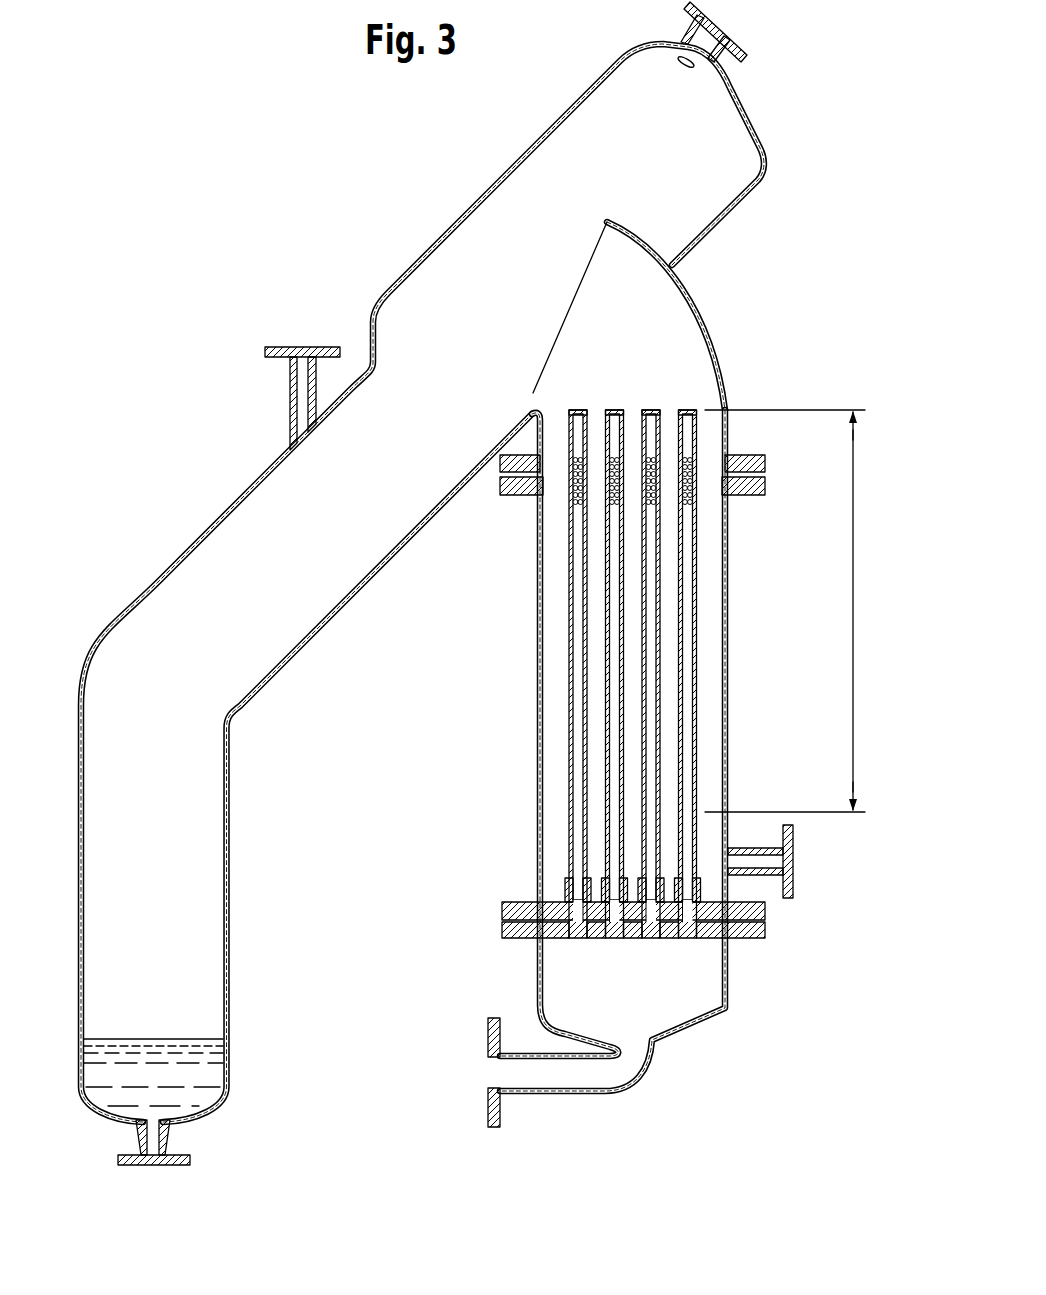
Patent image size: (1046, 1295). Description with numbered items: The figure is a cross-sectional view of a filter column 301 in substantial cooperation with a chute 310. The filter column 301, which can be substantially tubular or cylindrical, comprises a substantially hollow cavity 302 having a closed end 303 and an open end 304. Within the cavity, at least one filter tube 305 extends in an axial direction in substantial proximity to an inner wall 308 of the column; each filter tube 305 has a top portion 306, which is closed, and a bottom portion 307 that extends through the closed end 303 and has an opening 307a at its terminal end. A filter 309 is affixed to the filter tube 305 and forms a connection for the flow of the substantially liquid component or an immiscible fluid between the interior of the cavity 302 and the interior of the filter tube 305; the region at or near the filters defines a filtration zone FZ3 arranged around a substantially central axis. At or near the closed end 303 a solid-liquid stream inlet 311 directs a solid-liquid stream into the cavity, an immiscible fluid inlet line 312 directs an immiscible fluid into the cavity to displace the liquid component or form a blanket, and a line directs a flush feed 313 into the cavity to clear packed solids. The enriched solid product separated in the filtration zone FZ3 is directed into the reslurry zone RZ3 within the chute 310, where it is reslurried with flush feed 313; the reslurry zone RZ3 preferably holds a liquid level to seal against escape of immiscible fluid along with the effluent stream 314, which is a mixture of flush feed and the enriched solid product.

The filter column 301 is at (738, 697).
The substantially hollow cavity 302 is at (602, 300).
The closed end 303 is at (713, 940).
The open end 304 is at (695, 377).
The filter tube 305 is at (700, 656).
The top portion 306 is at (697, 430).
The bottom portion 307 is at (698, 870).
The opening 307a is at (690, 933).
The inner wall 308 is at (708, 587).
The filter 309 is at (697, 487).
The chute 310 is at (265, 470).
The solid-liquid stream inlet 311 is at (838, 860).
The immiscible fluid inlet line 312 is at (727, 18).
The flush feed 313 is at (302, 350).
The effluent stream 314 is at (153, 1152).
The filtration zone FZ3 is at (676, 768).
The reslurry zone RZ3 is at (176, 967).